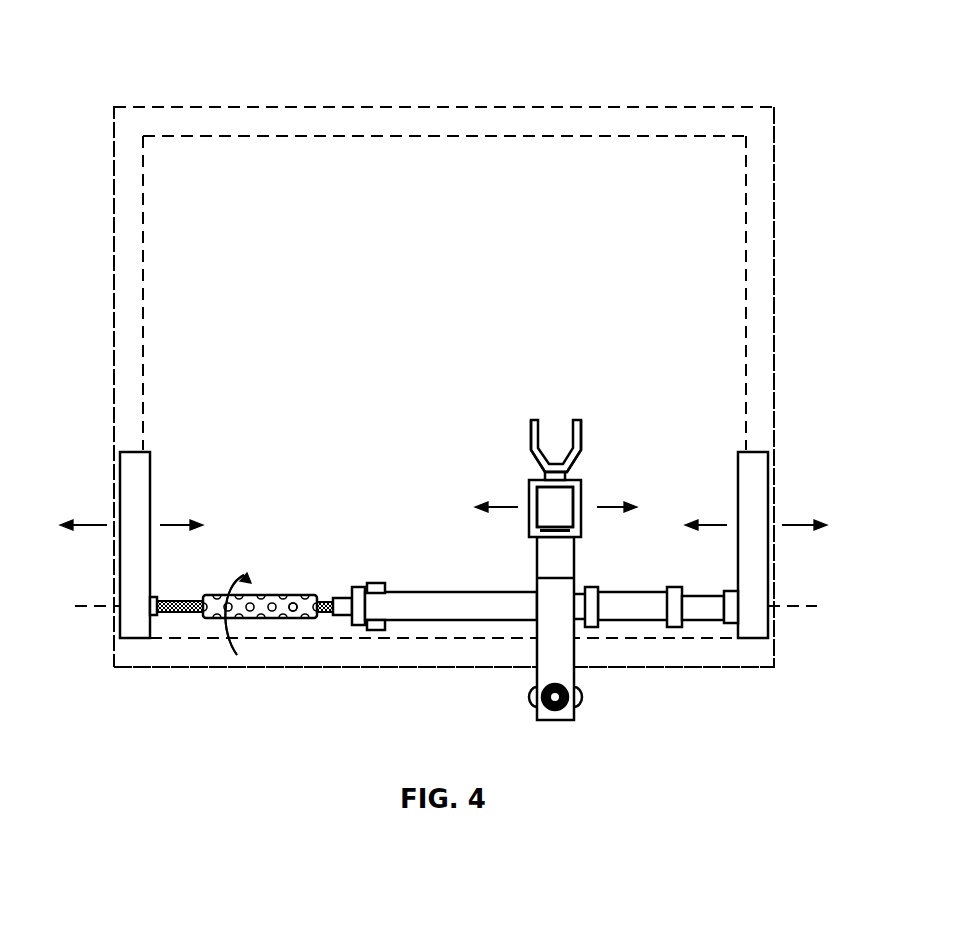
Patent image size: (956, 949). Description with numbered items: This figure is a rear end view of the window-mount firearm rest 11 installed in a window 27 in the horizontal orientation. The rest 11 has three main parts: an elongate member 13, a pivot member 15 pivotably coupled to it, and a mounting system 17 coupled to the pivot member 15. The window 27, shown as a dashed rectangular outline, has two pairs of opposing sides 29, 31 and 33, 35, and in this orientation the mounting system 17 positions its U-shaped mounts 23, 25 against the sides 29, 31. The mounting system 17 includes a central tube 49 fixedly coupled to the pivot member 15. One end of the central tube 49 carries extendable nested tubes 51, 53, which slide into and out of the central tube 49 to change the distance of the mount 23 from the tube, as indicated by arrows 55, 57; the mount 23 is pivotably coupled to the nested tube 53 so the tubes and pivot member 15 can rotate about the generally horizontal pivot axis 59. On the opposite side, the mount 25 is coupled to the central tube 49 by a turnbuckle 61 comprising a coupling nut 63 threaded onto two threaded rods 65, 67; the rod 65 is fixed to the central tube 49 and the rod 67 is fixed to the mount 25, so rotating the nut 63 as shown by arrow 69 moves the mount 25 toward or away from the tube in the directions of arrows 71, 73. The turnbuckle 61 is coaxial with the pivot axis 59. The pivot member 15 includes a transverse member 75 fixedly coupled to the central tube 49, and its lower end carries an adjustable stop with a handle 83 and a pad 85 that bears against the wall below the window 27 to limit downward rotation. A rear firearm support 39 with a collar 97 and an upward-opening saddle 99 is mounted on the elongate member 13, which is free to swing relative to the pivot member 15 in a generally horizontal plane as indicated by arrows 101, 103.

The window-mount firearm rest 11 is at (605, 251).
The elongate member 13 is at (521, 491).
The pivot member 15 is at (426, 634).
The mounting system 17 is at (288, 633).
The mount 23 is at (760, 543).
The mount 25 is at (125, 482).
The window 27 is at (240, 98).
The side 29 is at (767, 214).
The side 31 is at (118, 218).
The side 33 is at (176, 670).
The side 35 is at (632, 110).
The rear firearm support 39 is at (591, 424).
The central tube 49 is at (473, 596).
The nested tube 51 is at (603, 596).
The nested tube 53 is at (710, 612).
The arrow 55 is at (803, 520).
The arrow 57 is at (718, 521).
The pivot axis 59 is at (812, 606).
The turnbuckle 61 is at (270, 582).
The coupling nut 63 is at (294, 602).
The threaded rod 65 is at (325, 613).
The threaded rod 67 is at (168, 600).
The arrow 69 is at (242, 635).
The arrow 71 is at (177, 519).
The arrow 73 is at (84, 528).
The transverse member 75 is at (540, 666).
The handle 83 is at (556, 699).
The pad 85 is at (580, 695).
The collar 97 is at (581, 492).
The saddle 99 is at (531, 445).
The arrow 101 is at (603, 511).
The arrow 103 is at (498, 511).